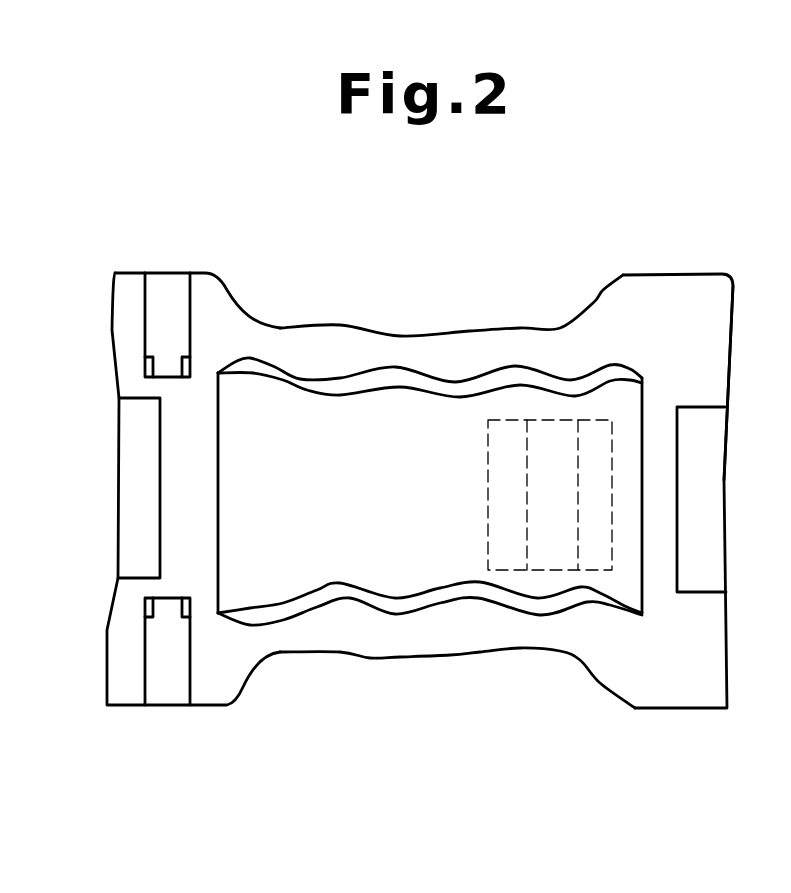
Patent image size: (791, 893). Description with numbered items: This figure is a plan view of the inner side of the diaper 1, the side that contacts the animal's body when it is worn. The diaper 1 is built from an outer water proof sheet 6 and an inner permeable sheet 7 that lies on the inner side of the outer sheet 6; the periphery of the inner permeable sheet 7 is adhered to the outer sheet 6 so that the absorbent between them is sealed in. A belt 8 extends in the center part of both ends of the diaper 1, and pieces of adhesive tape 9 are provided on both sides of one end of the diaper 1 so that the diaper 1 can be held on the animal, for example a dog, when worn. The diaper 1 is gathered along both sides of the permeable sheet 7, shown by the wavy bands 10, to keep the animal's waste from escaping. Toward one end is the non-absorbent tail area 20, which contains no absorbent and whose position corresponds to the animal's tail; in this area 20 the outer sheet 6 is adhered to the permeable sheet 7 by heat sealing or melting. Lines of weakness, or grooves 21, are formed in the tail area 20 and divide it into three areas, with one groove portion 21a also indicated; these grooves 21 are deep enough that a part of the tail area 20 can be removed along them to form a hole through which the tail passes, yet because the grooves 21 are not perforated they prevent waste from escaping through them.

The diaper 1 is at (440, 316).
The outer water proof sheet 6 is at (718, 310).
The inner permeable sheet 7 is at (298, 564).
The belt 8 is at (130, 430).
The adhesive tape 9 is at (165, 288).
The elastic band 10 is at (288, 373).
The non-absorbent tail area 20 is at (548, 574).
The grooves 21 is at (527, 480).
The conductive strip portion 21a is at (580, 507).